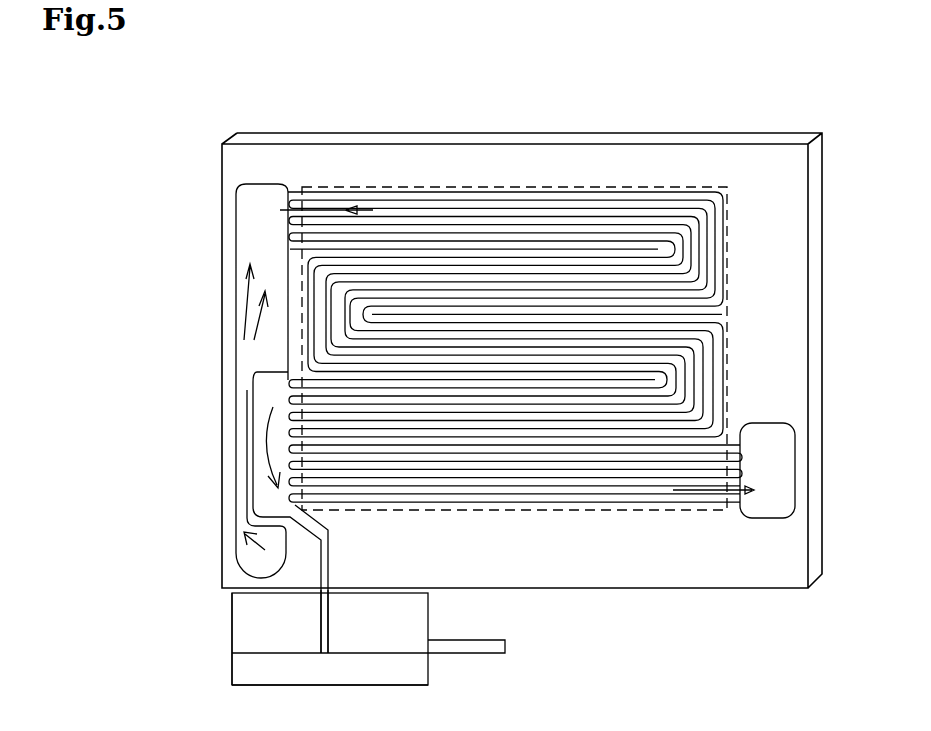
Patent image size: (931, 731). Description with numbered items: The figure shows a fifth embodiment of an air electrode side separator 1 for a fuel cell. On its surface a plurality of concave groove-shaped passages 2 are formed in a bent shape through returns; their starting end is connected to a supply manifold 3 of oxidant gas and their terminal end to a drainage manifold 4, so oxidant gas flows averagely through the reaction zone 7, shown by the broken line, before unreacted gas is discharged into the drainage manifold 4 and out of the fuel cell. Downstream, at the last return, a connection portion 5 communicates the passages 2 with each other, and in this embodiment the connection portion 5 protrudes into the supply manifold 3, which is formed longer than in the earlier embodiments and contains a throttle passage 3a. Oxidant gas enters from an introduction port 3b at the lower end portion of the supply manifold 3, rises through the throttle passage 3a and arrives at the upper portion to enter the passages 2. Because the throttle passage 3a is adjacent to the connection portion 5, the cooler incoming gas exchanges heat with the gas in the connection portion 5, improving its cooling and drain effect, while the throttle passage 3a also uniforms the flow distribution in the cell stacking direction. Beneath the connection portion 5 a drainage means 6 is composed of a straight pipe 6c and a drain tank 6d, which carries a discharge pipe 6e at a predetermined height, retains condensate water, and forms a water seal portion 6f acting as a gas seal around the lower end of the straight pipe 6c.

The air electrode side separator 1 is at (232, 162).
The passage 2 is at (500, 225).
The supply manifold 3 is at (250, 232).
The throttle passage 3a is at (247, 405).
The introduction port 3b is at (244, 568).
The drainage manifold 4 is at (782, 468).
The connection portion 5 is at (262, 494).
The drainage means 6 is at (452, 598).
The straight pipe 6c is at (330, 612).
The drain tank 6d is at (232, 628).
The discharge pipe 6e is at (476, 652).
The water seal portion 6f is at (323, 676).
The reaction zone 7 is at (580, 187).